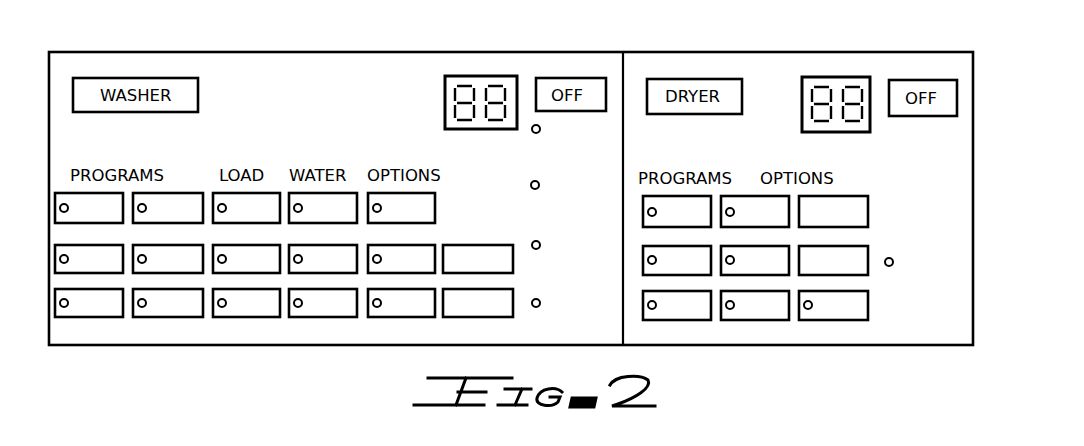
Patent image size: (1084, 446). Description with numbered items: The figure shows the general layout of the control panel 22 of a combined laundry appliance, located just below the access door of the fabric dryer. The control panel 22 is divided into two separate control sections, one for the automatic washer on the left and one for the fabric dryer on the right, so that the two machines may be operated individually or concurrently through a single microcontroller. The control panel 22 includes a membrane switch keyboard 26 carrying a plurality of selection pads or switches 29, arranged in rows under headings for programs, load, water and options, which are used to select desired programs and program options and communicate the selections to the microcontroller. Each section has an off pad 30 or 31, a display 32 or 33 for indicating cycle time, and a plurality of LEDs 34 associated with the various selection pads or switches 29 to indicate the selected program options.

The control panel 22 is at (231, 52).
The membrane switch keyboard 26 is at (307, 128).
The selection pads or switches 29 is at (461, 256).
The off pad 30 is at (582, 78).
The off pad 31 is at (910, 80).
The display 32 is at (480, 76).
The display 33 is at (830, 77).
The LEDs 34 is at (498, 249).